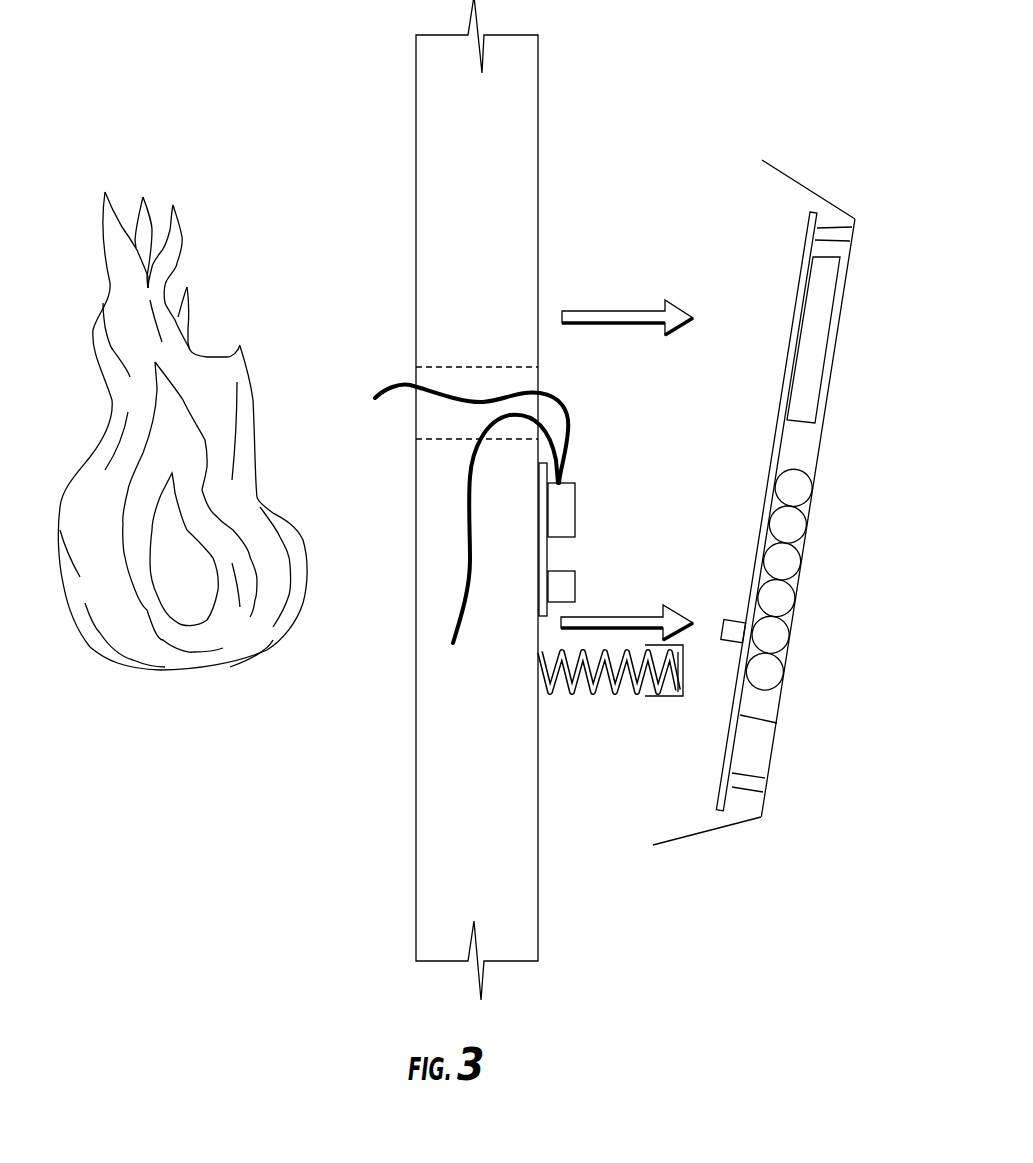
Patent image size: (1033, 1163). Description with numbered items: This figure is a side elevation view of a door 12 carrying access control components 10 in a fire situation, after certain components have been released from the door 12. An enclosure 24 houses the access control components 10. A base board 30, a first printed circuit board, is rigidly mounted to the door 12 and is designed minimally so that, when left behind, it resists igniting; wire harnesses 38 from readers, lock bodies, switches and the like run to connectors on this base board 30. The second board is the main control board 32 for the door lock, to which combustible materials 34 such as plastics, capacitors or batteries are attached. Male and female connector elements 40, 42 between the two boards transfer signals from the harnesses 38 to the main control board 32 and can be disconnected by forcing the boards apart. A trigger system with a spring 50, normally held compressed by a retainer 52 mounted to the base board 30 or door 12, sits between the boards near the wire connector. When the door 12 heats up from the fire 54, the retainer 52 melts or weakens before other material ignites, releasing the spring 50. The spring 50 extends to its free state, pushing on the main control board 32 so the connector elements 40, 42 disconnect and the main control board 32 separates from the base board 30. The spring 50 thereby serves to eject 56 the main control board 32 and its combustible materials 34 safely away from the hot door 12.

The access control components 10 is at (784, 106).
The door 12 is at (437, 193).
The enclosure 24 is at (827, 201).
The base board 30 is at (537, 552).
The main control board 32 is at (777, 723).
The combustible materials 34 is at (823, 375).
The wire harnesses 38 is at (470, 470).
The male connector element 40 is at (567, 588).
The female connector element 42 is at (734, 618).
The spring 50 is at (597, 692).
The retainer 52 is at (667, 697).
The fire 54 is at (191, 586).
The eject 56 is at (629, 310).